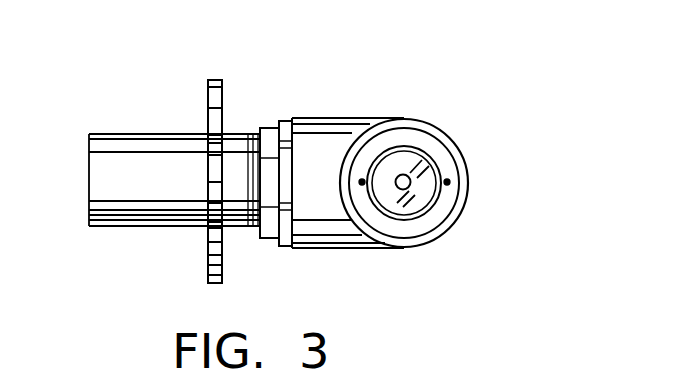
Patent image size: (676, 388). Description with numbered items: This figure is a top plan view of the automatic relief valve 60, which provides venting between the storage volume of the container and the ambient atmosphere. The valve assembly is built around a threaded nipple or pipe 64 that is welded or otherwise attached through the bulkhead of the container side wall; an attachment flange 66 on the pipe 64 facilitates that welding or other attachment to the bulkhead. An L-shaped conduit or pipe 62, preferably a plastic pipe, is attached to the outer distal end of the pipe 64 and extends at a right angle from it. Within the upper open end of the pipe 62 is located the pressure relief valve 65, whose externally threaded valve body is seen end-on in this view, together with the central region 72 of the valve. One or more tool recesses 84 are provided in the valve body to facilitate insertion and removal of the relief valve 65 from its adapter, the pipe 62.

The automatic relief valve 60 is at (416, 85).
The L-shaped conduit or pipe 62 is at (313, 148).
The threaded nipple or pipe 64 is at (184, 193).
The pressure relief valve 65 is at (415, 137).
The attachment flange 66 is at (215, 107).
The hub 72 is at (399, 203).
The tool recesses 84 is at (450, 182).